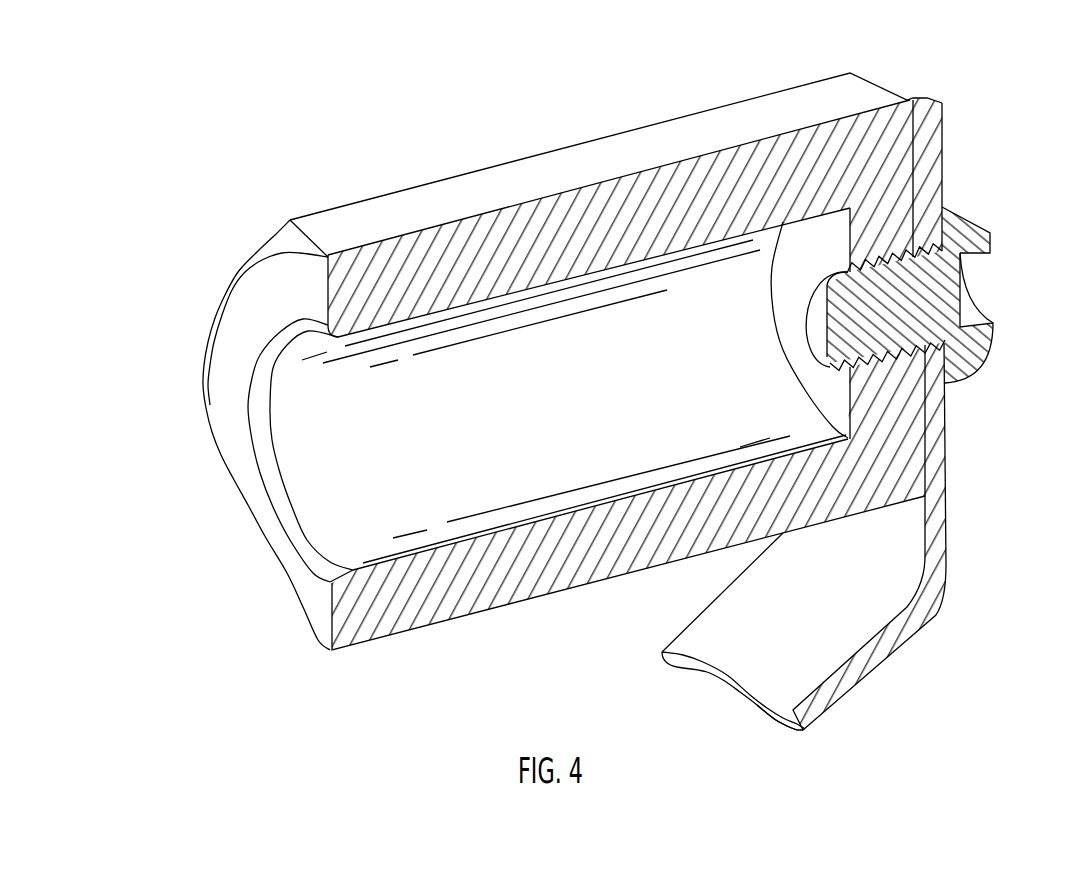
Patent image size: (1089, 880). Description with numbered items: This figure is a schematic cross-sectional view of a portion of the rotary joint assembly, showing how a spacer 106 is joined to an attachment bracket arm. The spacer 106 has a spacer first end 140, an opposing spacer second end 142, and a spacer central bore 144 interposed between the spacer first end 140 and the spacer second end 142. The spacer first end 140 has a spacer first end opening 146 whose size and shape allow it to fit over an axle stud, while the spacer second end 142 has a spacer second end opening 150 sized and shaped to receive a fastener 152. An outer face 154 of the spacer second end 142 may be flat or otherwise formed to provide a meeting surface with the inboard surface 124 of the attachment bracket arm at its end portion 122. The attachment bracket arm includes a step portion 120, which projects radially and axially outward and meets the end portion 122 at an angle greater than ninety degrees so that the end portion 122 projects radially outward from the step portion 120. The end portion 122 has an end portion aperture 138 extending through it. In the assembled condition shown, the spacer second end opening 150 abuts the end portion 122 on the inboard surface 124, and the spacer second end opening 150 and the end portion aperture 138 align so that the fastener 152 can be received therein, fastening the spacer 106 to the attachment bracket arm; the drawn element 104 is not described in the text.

The bracket 104 is at (947, 568).
The spacer 106 is at (613, 133).
The step portion 120 is at (775, 687).
The end portion 122 is at (947, 507).
The inboard surface 124 is at (740, 668).
The end portion aperture 138 is at (940, 341).
The spacer first end 140 is at (312, 640).
The spacer second end 142 is at (903, 97).
The spacer central bore 144 is at (507, 409).
The spacer first end opening 146 is at (305, 493).
The spacer second end opening 150 is at (803, 333).
The fastener 152 is at (972, 233).
The outer face 154 is at (925, 438).